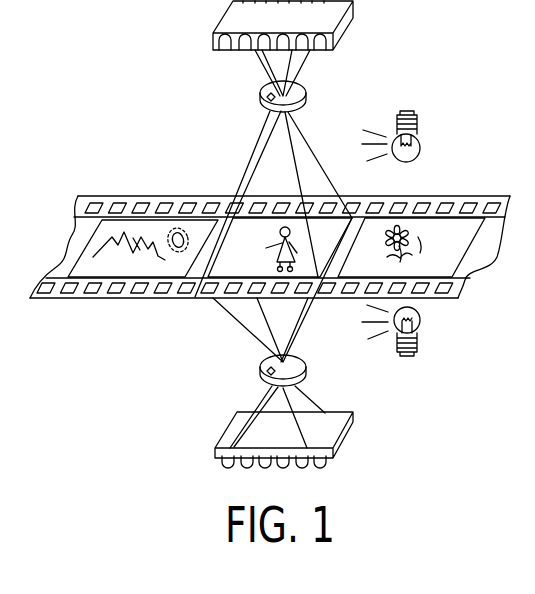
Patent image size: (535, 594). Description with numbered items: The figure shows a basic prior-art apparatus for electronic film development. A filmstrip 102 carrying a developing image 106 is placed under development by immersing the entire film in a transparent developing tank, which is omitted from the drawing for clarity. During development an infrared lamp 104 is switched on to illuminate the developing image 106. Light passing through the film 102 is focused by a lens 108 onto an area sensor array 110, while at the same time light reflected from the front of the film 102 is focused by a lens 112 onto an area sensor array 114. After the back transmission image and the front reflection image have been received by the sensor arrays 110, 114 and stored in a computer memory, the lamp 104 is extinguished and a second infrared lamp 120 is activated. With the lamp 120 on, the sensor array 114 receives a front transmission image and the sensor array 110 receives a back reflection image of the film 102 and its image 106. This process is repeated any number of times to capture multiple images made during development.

The filmstrip 102 is at (110, 197).
The infrared lamp 104 is at (421, 144).
The developing image 106 is at (218, 265).
The lens 108 is at (306, 370).
The area sensor array 110 is at (318, 415).
The lens 112 is at (306, 95).
The area sensor array 114 is at (348, 20).
The infrared lamp 120 is at (421, 322).